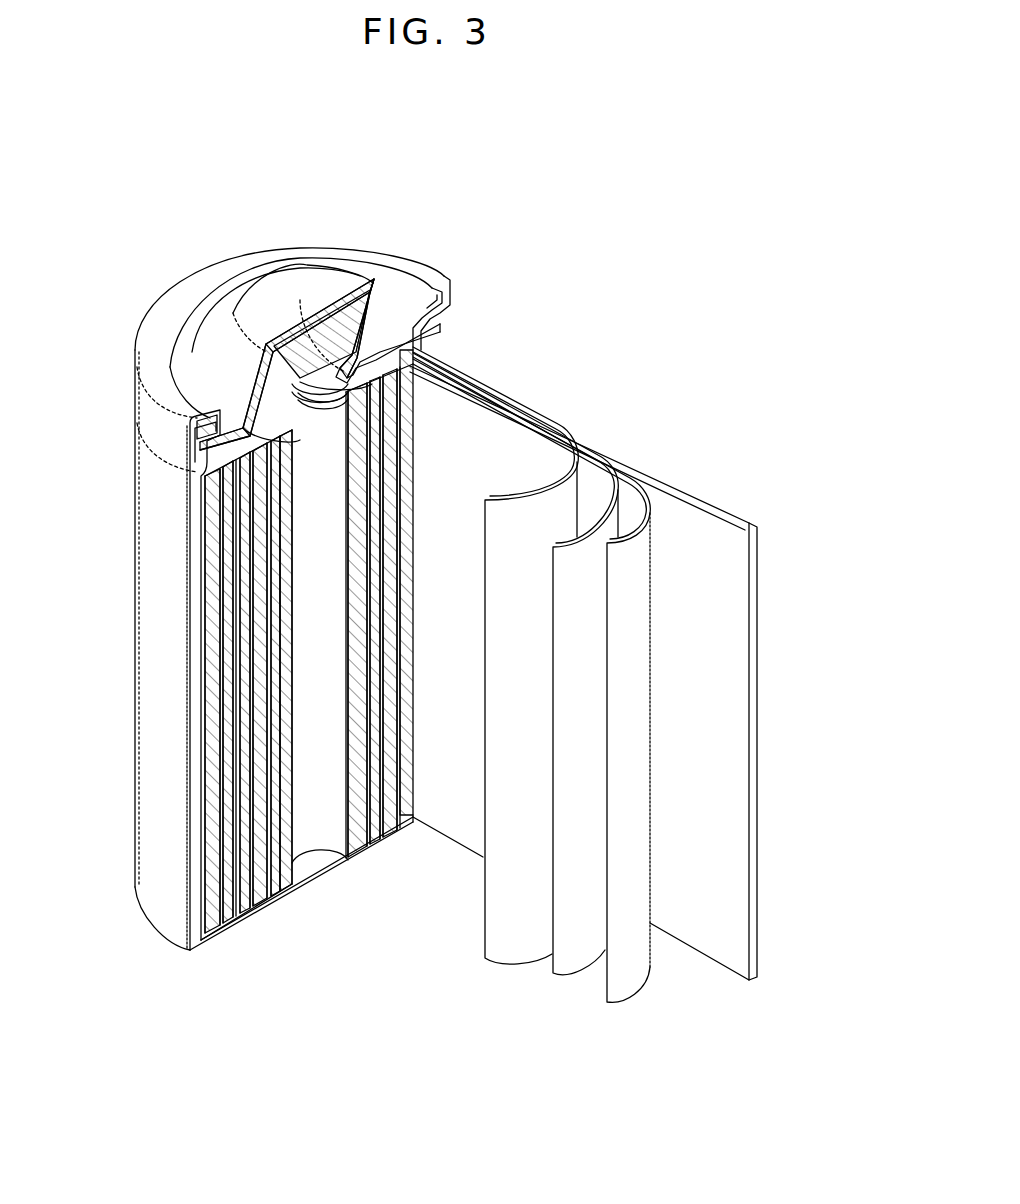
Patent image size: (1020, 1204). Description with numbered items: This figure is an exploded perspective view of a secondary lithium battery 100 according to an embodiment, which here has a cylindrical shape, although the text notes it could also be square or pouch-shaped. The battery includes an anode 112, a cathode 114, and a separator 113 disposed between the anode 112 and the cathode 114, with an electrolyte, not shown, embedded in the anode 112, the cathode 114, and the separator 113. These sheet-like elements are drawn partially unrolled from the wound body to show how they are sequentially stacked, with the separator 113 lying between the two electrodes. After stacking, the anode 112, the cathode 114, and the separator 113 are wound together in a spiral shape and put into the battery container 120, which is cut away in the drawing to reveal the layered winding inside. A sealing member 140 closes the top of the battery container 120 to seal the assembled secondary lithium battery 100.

The secondary lithium battery 100 is at (401, 181).
The anode 112 is at (705, 497).
The separator 113 is at (505, 410).
The cathode 114 is at (587, 475).
The battery container 120 is at (150, 688).
The sealing member 140 is at (292, 282).